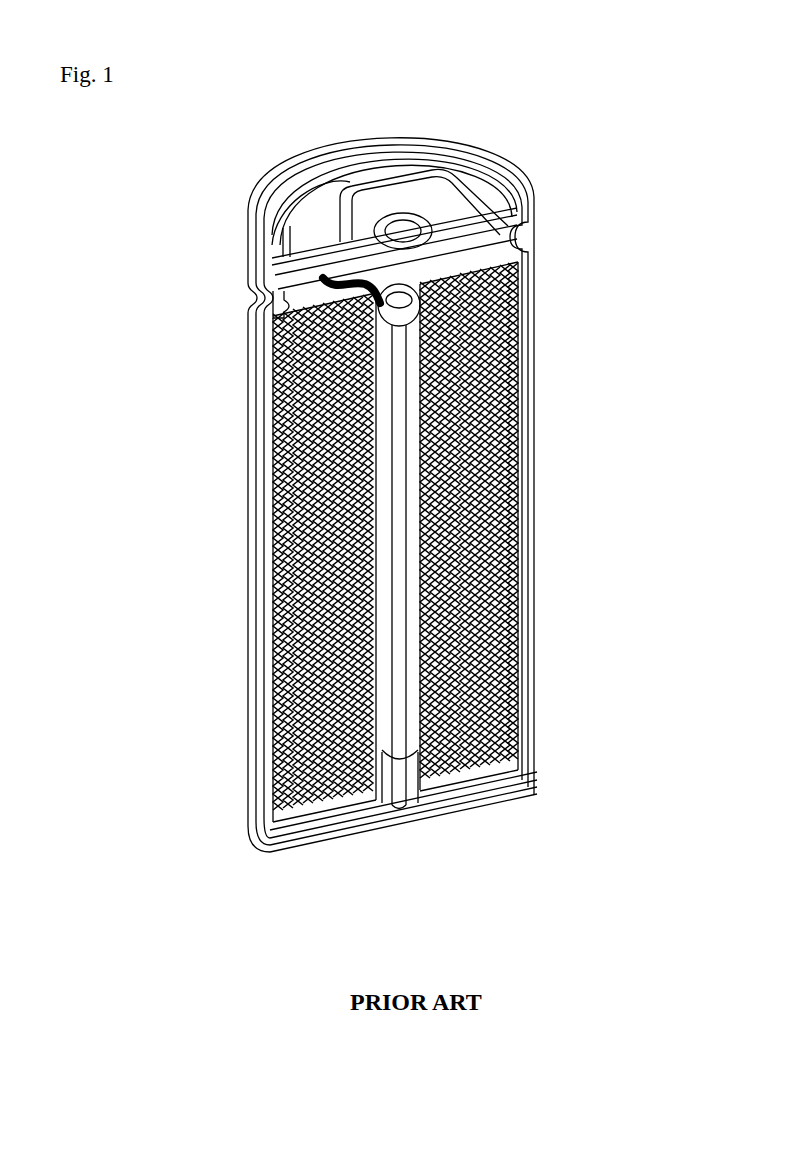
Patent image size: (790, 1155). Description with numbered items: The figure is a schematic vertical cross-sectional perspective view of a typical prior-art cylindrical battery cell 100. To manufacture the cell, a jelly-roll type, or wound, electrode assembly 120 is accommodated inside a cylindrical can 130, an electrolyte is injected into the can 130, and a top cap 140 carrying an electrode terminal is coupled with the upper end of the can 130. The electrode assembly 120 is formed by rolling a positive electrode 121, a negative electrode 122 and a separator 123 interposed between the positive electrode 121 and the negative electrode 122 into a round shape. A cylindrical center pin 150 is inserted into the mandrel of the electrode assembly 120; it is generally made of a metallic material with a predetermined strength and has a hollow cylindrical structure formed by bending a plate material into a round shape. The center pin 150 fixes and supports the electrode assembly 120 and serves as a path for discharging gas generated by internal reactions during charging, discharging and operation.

The cylindrical battery cell 100 is at (200, 148).
The electrode assembly 120 is at (451, 856).
The positive electrode 121 is at (535, 780).
The negative electrode 122 is at (510, 790).
The separator 123 is at (403, 847).
The cylindrical can 130 is at (534, 468).
The top cap 140 is at (545, 176).
The center pin 150 is at (360, 547).